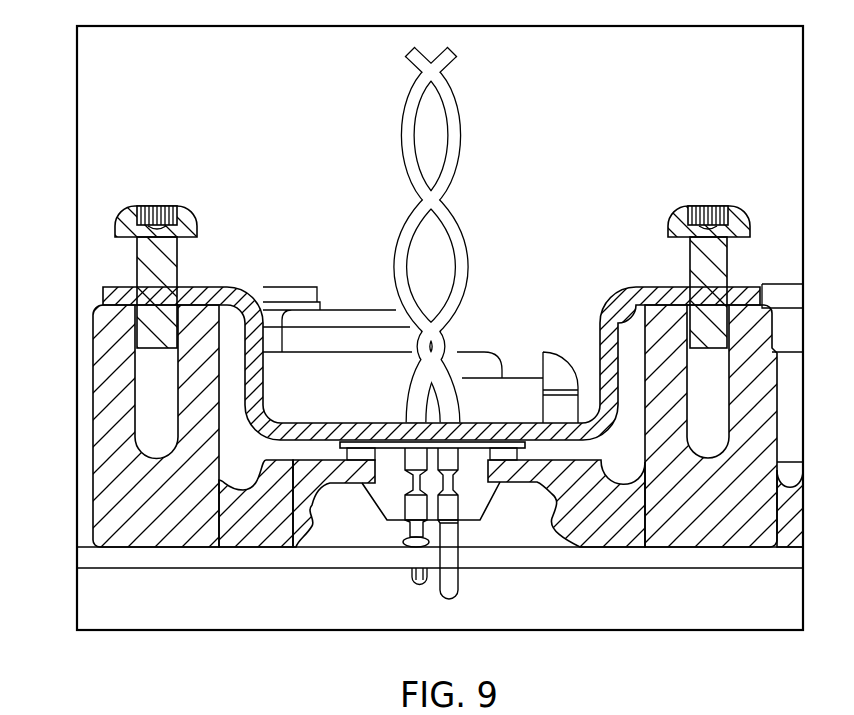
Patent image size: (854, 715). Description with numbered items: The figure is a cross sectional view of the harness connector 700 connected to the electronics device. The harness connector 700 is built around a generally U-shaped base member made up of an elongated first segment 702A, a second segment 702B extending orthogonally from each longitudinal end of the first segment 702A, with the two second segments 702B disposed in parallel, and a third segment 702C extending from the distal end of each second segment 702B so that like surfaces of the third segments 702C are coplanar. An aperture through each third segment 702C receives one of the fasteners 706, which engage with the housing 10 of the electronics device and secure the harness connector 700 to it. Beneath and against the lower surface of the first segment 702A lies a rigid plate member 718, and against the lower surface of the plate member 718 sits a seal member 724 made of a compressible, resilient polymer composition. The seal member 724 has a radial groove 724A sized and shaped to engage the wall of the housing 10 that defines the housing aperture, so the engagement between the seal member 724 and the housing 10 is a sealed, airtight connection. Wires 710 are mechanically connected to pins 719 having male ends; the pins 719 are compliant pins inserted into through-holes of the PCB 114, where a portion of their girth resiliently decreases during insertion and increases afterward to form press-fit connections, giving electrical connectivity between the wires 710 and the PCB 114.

The harness connector 700 is at (588, 104).
The housing 10 is at (100, 512).
The PCB 114 is at (630, 561).
The first segment 702A is at (373, 420).
The second segment 702B is at (298, 383).
The third segment 702C is at (118, 287).
The fasteners 706 is at (178, 205).
The wires 710 is at (412, 128).
The plate member 718 is at (482, 445).
The pins 719 is at (440, 592).
The seal member 724 is at (392, 508).
The radial groove 724A is at (505, 483).